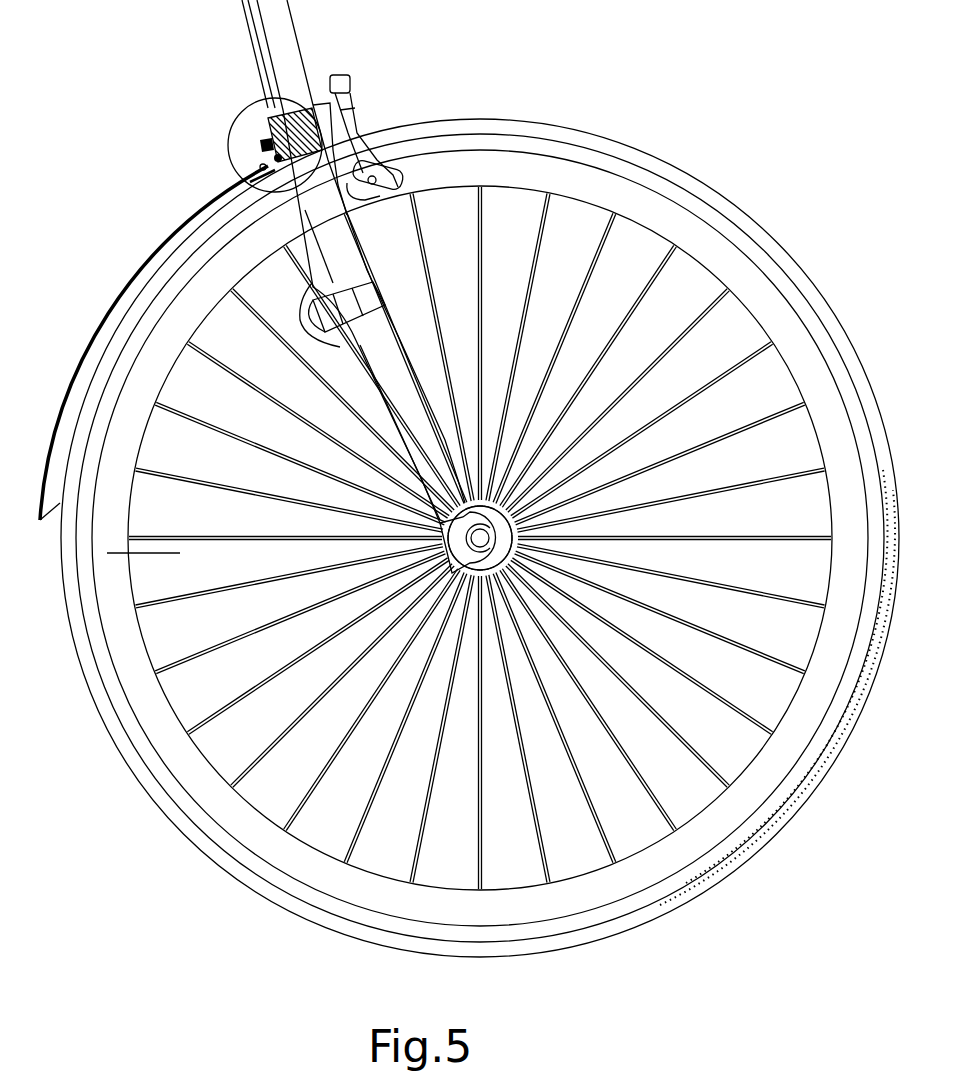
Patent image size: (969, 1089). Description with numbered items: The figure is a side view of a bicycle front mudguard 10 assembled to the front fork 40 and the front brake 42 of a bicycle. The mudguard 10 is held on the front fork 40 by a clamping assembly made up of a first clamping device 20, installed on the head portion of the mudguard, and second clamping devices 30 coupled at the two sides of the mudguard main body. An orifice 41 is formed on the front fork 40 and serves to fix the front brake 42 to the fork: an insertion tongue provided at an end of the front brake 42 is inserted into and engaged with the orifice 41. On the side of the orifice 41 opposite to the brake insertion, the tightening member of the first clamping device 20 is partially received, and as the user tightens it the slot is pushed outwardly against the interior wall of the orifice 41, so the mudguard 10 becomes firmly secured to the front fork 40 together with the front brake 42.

The front mudguard 10 is at (86, 292).
The first clamping device 20 is at (234, 128).
The second clamping device 30 is at (300, 312).
The front fork 40 is at (462, 246).
The orifice 41 is at (287, 140).
The front brake 42 is at (353, 127).